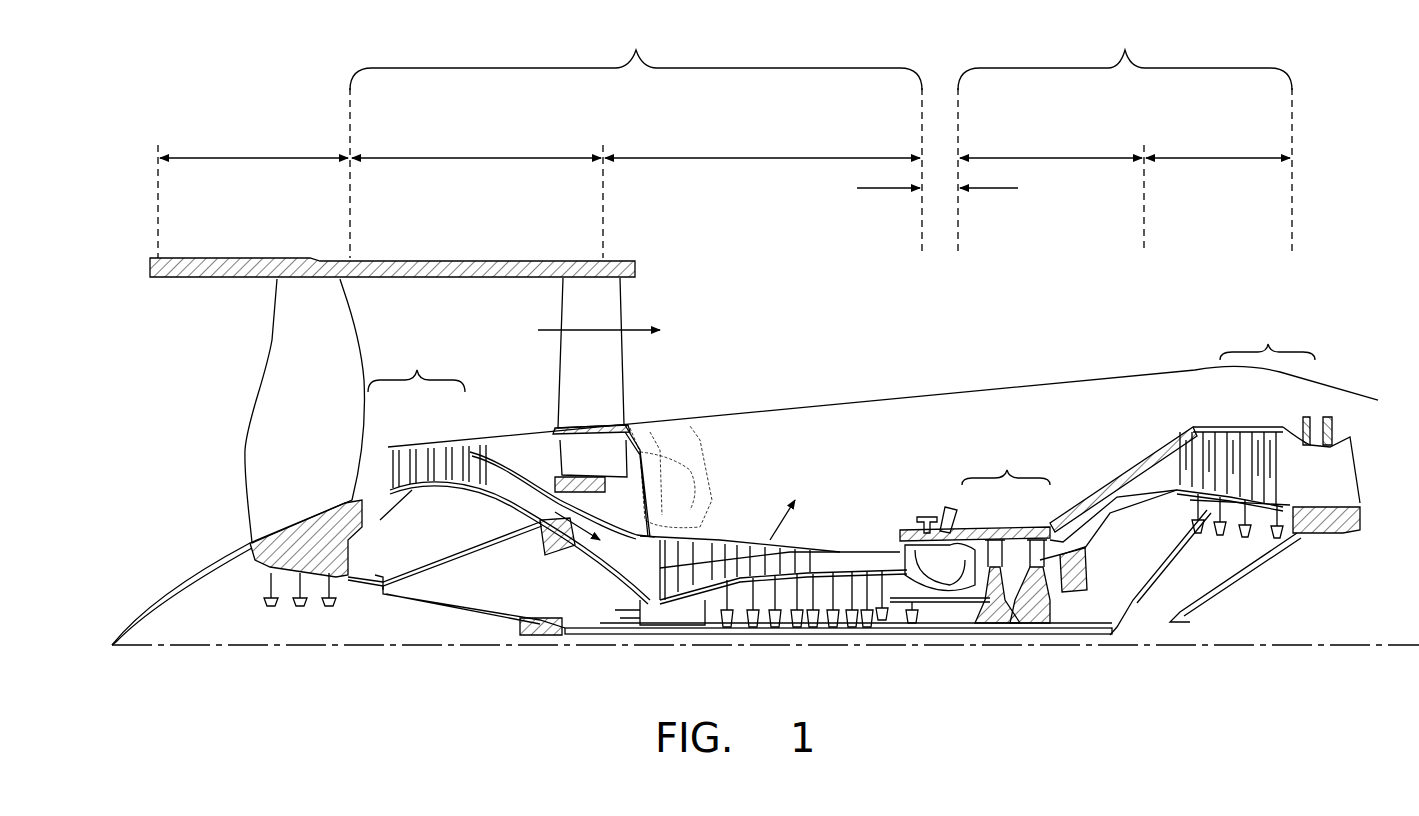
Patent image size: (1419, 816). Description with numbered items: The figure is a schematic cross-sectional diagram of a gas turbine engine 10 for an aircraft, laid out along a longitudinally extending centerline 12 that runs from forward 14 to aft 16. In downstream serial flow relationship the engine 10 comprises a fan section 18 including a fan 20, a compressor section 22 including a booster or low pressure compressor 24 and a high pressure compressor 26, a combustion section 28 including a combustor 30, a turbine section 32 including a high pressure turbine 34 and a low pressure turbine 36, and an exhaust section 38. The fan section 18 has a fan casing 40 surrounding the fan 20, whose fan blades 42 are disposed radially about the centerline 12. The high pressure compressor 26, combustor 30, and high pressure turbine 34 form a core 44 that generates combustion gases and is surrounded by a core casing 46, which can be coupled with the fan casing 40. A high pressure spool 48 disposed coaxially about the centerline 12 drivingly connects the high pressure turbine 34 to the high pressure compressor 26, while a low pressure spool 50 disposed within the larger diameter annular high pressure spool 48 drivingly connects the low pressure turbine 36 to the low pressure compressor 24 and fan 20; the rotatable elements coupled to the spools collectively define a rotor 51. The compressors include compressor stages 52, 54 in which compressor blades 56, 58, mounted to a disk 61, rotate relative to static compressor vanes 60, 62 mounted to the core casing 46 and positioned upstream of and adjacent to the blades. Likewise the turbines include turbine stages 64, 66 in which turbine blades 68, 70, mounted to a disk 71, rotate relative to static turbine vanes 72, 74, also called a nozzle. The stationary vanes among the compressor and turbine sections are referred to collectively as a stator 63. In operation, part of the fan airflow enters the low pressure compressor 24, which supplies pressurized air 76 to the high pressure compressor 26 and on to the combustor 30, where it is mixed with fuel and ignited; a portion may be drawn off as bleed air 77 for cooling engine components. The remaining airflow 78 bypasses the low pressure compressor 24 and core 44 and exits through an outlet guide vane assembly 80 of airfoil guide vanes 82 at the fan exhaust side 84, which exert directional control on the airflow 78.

The gas turbine engine 10 is at (1305, 185).
The centerline 12 is at (235, 650).
The forward 14 is at (163, 387).
The aft 16 is at (1360, 478).
The fan section 18 is at (255, 158).
The fan 20 is at (232, 500).
The compressor section 22 is at (638, 46).
The low pressure compressor 24 is at (485, 158).
The high pressure compressor 26 is at (762, 158).
The combustion section 28 is at (870, 188).
The combustor 30 is at (945, 505).
The turbine section 32 is at (1127, 46).
The high pressure turbine 34 is at (1050, 158).
The low pressure turbine 36 is at (1216, 158).
The exhaust section 38 is at (1352, 452).
The fan casing 40 is at (385, 260).
The fan blades 42 is at (328, 324).
The core 44 is at (885, 420).
The core casing 46 is at (1128, 470).
The HP spool 48 is at (920, 634).
The LP spool 50 is at (540, 635).
The rotor 51 is at (790, 645).
The compressor stages 52 is at (634, 516).
The compressor stages 54 is at (773, 520).
The compressor blades 56 is at (425, 455).
The compressor blades 58 is at (695, 560).
The static compressor vanes 60 is at (410, 450).
The disk 61 is at (442, 497).
The static compressor vanes 62 is at (683, 545).
The stator 63 is at (1200, 430).
The turbine stages 64 is at (1009, 526).
The turbine stages 66 is at (1143, 504).
The turbine blades 68 is at (1012, 540).
The turbine blades 70 is at (1278, 432).
The disk 71 is at (1195, 505).
The static turbine vanes 72 is at (995, 540).
The static turbine vanes 74 is at (1262, 430).
The pressurized air 76 is at (575, 555).
The bleed air 77 is at (775, 520).
The airflow 78 is at (555, 330).
The outlet guide vane assembly 80 is at (637, 382).
The airfoil guide vanes 82 is at (570, 362).
The fan exhaust side 84 is at (645, 300).